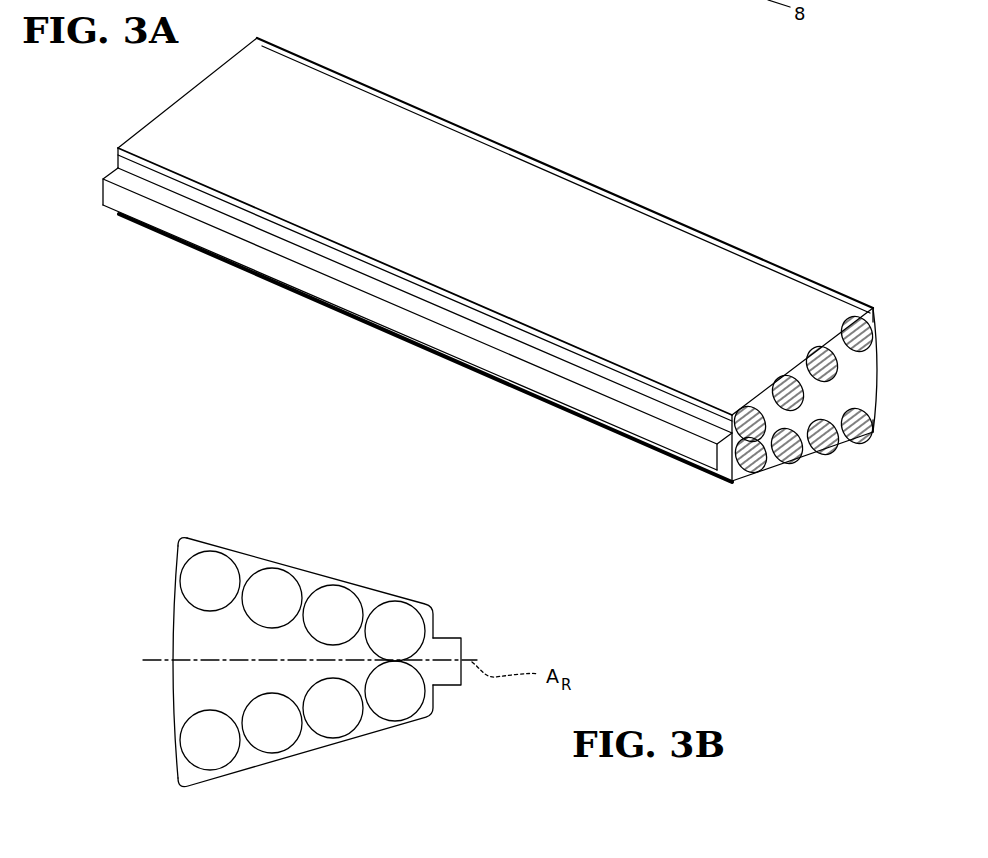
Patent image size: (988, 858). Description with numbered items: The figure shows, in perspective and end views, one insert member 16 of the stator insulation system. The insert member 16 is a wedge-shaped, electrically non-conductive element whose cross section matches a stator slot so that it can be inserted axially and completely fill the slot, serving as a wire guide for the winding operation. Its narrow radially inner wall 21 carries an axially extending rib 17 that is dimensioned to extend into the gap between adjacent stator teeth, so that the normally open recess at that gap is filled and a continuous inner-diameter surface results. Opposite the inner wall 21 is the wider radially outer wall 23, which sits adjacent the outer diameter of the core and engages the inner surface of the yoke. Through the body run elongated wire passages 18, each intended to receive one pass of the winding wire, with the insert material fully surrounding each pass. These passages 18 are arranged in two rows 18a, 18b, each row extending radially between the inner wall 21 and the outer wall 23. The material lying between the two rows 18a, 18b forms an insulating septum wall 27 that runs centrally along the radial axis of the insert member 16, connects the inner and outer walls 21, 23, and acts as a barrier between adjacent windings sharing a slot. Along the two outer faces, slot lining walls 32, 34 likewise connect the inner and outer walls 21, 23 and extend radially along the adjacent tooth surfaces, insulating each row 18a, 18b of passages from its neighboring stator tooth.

In FIG. 3A, the insert member 16 is at (568, 170).
In FIG. 3B, the insert member 16 is at (165, 630).
In FIG. 3A, the axially extending rib 17 is at (418, 305).
In FIG. 3B, the axially extending rib 17 is at (447, 637).
In FIG. 3A, the wire passage 18 is at (828, 452).
In FIG. 3B, the wire passage 18 is at (300, 607).
In FIG. 3A, the first row of holes 18a is at (877, 330).
In FIG. 3B, the first row of holes 18a is at (176, 748).
In FIG. 3A, the second row of holes 18b is at (877, 437).
In FIG. 3B, the second row of holes 18b is at (180, 577).
In FIG. 3A, the radially inner wall 21 is at (183, 190).
In FIG. 3B, the radially inner wall 21 is at (435, 700).
In FIG. 3A, the radially outer wall 23 is at (882, 373).
In FIG. 3B, the radially outer wall 23 is at (172, 700).
In FIG. 3B, the insulating septum wall 27 is at (232, 638).
In FIG. 3A, the stator slot lining wall 32 is at (457, 197).
In FIG. 3B, the stator slot lining wall 32 is at (282, 760).
In FIG. 3A, the stator slot lining wall 34 is at (767, 473).
In FIG. 3B, the stator slot lining wall 34 is at (352, 578).